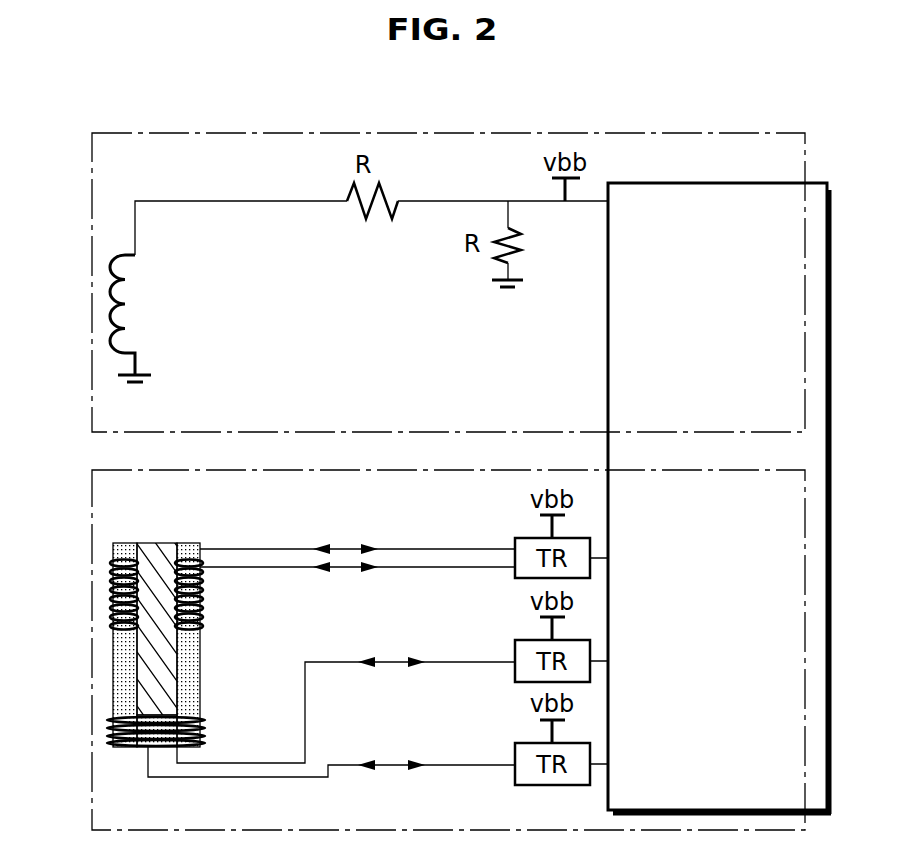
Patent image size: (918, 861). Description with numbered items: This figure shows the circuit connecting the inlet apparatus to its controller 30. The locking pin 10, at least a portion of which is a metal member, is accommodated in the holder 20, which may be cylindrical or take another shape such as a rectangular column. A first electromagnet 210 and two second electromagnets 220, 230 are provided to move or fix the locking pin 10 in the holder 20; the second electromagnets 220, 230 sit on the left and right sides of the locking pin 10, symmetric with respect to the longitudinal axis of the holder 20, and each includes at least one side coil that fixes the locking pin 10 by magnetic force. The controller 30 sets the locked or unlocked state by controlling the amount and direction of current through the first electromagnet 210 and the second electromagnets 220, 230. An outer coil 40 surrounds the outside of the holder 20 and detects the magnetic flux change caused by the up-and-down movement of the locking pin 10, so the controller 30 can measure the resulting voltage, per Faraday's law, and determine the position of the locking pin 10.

The locking pin 10 is at (160, 548).
The holder 20 is at (124, 548).
The controller 30 is at (772, 183).
The outer coil 40 is at (106, 268).
The first electromagnet 210 is at (205, 728).
The second electromagnet 220 is at (108, 583).
The second electromagnet 230 is at (203, 583).